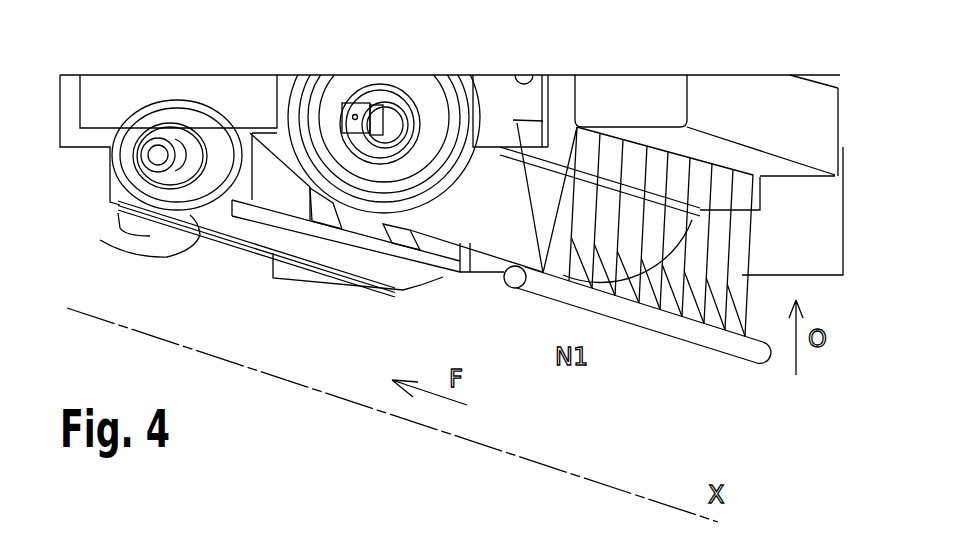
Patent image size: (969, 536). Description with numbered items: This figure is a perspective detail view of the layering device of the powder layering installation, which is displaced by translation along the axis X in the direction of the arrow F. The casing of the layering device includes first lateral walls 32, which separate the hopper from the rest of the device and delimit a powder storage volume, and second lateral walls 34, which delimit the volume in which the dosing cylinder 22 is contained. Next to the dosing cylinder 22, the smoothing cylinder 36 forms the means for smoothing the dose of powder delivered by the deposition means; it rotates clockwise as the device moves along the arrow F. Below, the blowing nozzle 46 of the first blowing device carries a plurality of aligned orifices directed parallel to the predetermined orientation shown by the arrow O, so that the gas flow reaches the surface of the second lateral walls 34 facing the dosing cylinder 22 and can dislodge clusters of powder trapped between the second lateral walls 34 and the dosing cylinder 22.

The first lateral walls 32 is at (65, 113).
The second lateral walls 34 is at (120, 243).
The dosing cylinder 22 is at (257, 227).
The smoothing cylinder 36 is at (453, 227).
The blowing nozzle 46 is at (647, 317).